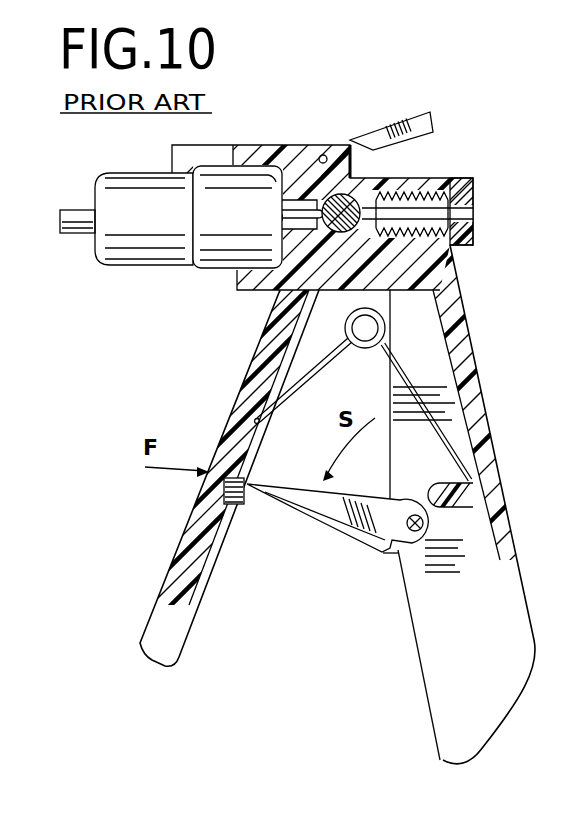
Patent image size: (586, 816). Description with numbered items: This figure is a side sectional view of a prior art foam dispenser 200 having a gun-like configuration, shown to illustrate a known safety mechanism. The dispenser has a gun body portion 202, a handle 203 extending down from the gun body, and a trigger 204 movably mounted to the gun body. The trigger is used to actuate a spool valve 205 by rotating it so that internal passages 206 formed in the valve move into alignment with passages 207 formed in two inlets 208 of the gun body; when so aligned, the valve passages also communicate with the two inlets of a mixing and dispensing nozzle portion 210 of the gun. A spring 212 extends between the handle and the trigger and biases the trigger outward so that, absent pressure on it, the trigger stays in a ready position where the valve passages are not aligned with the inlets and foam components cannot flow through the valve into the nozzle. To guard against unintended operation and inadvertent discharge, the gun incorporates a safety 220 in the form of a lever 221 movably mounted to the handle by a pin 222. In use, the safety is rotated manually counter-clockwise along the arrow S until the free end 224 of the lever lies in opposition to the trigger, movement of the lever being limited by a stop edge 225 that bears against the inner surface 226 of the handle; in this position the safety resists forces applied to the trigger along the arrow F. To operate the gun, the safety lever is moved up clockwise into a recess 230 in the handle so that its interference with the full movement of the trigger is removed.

The foam dispenser 200 is at (460, 150).
The gun body portion 202 is at (413, 258).
The handle 203 is at (495, 456).
The trigger 204 is at (205, 440).
The spool valve 205 is at (347, 193).
The internal passages 206 is at (356, 193).
The passages 207 is at (407, 213).
The inlets 208 is at (470, 185).
The mixing and dispensing nozzle portion 210 is at (122, 195).
The spring 212 is at (415, 380).
The safety 220 is at (330, 537).
The lever 221 is at (277, 500).
The pin 222 is at (445, 512).
The free end 224 is at (243, 492).
The stop edge 225 is at (402, 562).
The inner surface 226 is at (473, 507).
The recess 230 is at (413, 447).